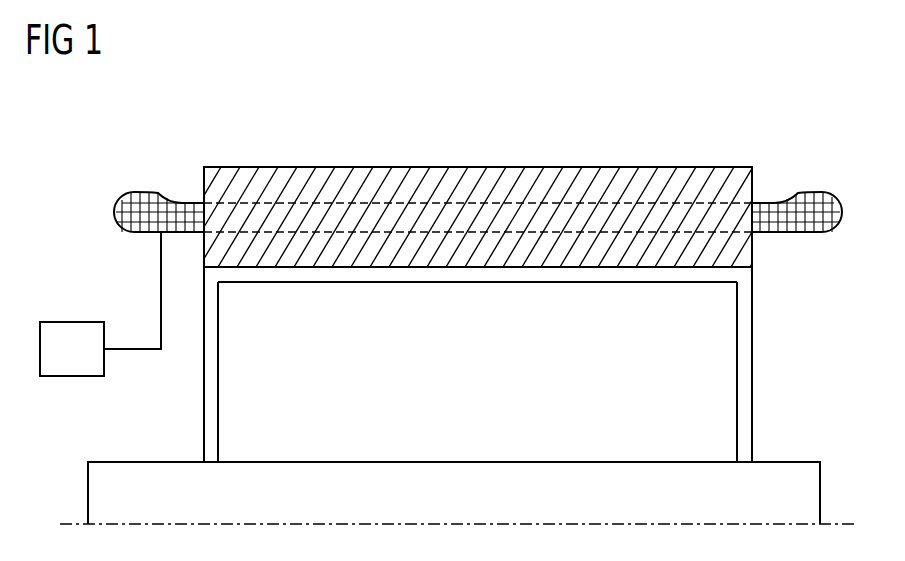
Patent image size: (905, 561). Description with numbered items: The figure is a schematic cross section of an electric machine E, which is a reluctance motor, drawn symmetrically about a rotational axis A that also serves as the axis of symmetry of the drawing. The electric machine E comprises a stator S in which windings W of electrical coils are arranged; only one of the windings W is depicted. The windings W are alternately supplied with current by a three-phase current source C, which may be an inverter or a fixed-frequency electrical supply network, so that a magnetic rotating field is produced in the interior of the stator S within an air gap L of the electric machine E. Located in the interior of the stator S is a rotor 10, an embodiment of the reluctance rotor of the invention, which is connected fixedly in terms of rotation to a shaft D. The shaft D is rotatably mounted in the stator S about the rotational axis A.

The electric machine E is at (712, 131).
The stator S is at (625, 178).
The windings W is at (580, 203).
The air gap L is at (726, 274).
The rotor 10 is at (726, 321).
The three-phase current source C is at (70, 322).
The shaft D is at (791, 462).
The rotational axis A is at (842, 525).